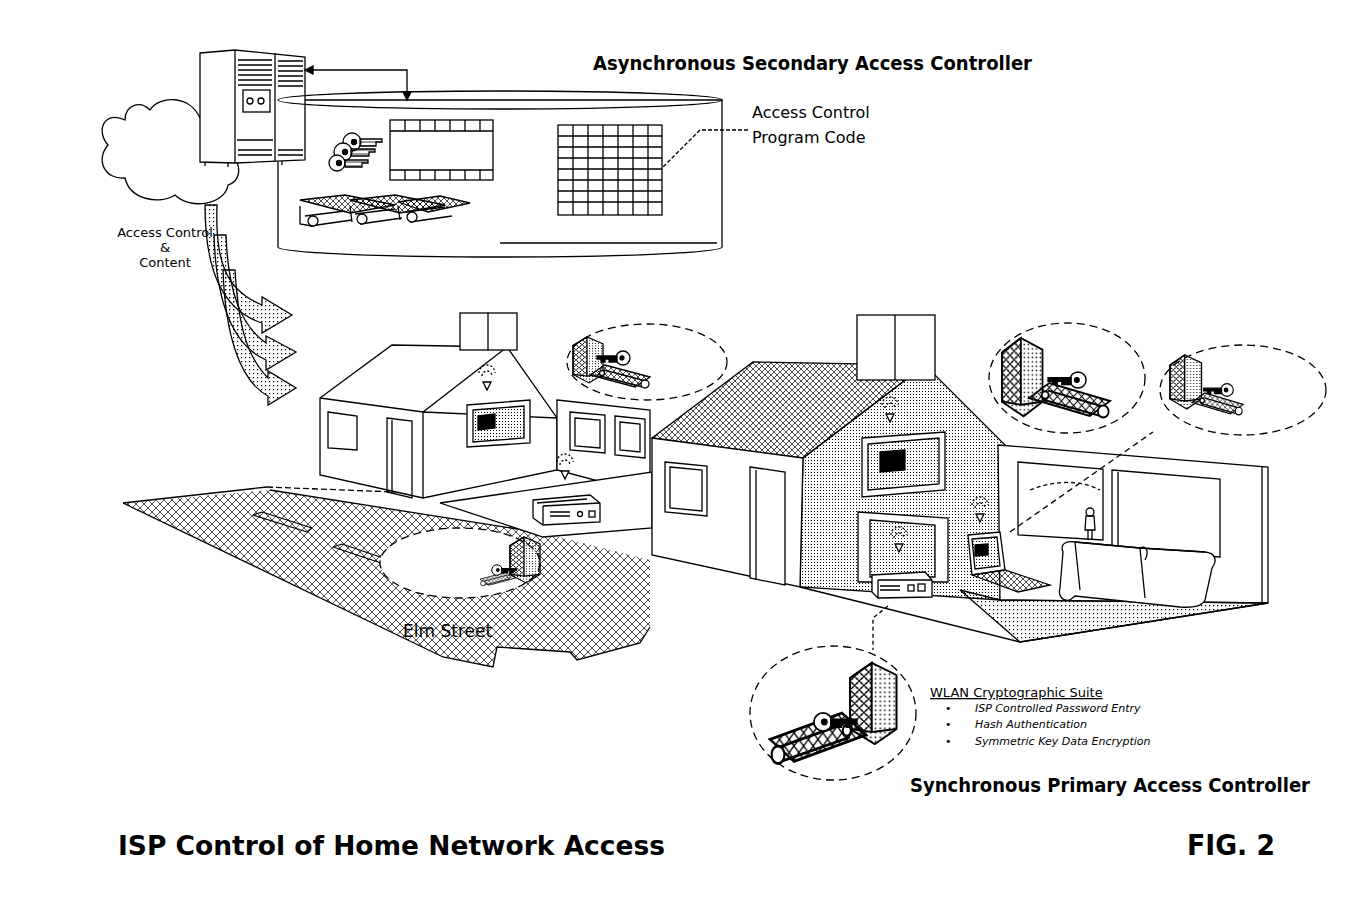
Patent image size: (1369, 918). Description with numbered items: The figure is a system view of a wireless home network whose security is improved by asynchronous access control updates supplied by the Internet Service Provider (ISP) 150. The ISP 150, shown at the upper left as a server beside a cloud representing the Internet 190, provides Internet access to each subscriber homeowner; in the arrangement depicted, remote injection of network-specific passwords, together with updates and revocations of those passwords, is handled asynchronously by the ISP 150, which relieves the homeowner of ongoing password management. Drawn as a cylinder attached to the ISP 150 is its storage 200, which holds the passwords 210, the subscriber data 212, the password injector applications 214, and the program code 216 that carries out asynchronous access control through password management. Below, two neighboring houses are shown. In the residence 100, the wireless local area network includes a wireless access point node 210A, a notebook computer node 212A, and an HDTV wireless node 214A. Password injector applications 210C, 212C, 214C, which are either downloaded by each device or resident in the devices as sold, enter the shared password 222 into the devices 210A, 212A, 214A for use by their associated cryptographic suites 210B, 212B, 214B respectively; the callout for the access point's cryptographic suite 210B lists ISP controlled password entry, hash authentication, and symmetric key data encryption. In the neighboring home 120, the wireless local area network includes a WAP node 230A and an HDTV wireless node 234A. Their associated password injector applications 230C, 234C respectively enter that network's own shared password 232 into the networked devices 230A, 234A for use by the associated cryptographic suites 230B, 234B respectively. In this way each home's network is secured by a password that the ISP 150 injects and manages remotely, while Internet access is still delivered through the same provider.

The residence 100 is at (765, 370).
The neighboring home 120 is at (395, 350).
The Internet Service Provider (ISP) 150 is at (207, 73).
The Internet 190 is at (185, 105).
The storage 200 is at (445, 103).
The passwords 210 is at (366, 144).
The wireless access point (WAP) node 210A is at (872, 588).
The cryptographic suite 210B is at (798, 713).
The password injector application 210C is at (770, 735).
The subscriber data 212 is at (493, 138).
The notebook computer node 212A is at (1002, 562).
The cryptographic suite 212B is at (1243, 376).
The password injector application 212C is at (1240, 408).
The password injector applications 214 is at (455, 222).
The HDTV wireless node 214A is at (902, 440).
The cryptographic suite 214B is at (1067, 367).
The password injector application 214C is at (1088, 396).
The program code 216 is at (660, 206).
The shared password 222 is at (823, 714).
The WAP node 230A is at (533, 506).
The cryptographic suite 230B is at (541, 558).
The password injector application 230C is at (490, 563).
The shared password 232 is at (497, 562).
The HDTV wireless node 234A is at (487, 447).
The cryptographic suite 234B is at (647, 349).
The password injector application 234C is at (640, 381).